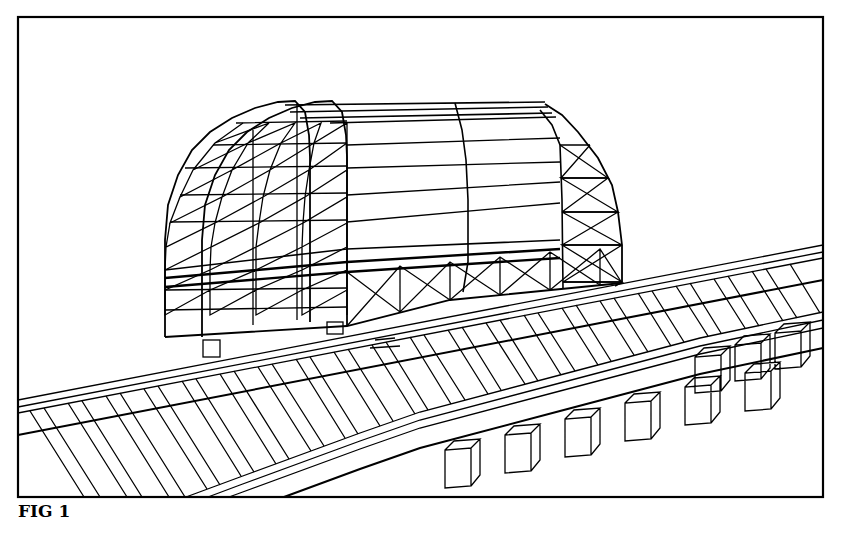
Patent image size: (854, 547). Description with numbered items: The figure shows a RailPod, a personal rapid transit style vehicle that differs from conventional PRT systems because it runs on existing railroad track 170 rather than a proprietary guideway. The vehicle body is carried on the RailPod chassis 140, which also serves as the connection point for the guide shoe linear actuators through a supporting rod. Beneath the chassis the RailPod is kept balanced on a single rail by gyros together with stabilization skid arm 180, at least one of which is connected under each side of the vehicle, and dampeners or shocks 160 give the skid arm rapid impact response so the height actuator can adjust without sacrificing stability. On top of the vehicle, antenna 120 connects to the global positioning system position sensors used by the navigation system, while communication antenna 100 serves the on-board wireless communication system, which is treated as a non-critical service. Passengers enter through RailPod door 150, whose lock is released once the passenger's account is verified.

The communication antenna 100 is at (459, 260).
The antenna 120 is at (491, 100).
The RailPod door 150 is at (518, 215).
The RailPod chassis 140 is at (517, 297).
The dampeners or shocks 160 is at (381, 343).
The railroad track 170 is at (514, 402).
The stabilization skid arm 180 is at (417, 358).